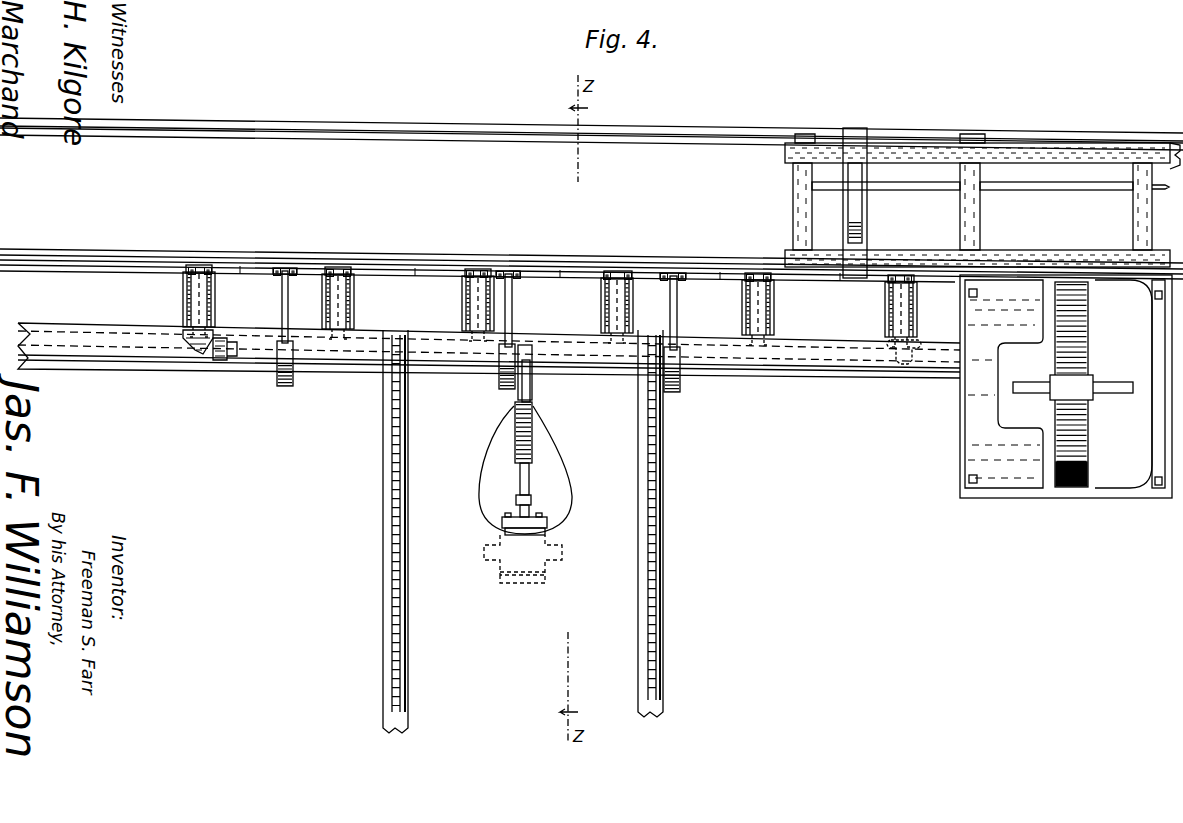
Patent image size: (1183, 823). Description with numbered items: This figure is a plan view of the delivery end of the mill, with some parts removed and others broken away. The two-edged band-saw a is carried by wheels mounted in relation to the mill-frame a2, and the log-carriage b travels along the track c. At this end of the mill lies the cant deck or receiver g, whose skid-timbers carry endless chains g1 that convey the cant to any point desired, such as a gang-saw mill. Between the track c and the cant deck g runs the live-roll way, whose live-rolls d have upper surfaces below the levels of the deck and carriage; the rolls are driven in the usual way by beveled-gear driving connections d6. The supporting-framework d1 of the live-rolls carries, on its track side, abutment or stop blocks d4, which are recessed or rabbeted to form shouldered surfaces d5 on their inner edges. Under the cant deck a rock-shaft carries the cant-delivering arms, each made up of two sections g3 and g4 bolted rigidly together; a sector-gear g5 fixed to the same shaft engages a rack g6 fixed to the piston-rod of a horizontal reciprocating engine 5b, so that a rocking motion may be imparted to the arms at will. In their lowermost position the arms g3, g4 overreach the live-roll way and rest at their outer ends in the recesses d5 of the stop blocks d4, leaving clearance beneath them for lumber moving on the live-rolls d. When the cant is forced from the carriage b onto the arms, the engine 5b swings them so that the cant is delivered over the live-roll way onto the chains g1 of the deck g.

The track c is at (518, 139).
The live-rolls d is at (211, 312).
The supporting-framework d1 is at (360, 273).
The abutment or stop block d4 is at (270, 276).
The shouldered surfaces (recesses) d5 is at (289, 269).
The beveled-gear driving connections d6 is at (200, 368).
The cant deck g is at (408, 551).
The endless chains g1 is at (401, 487).
The cant-delivering arm section g3 is at (294, 381).
The cant-delivering arm section g4 is at (288, 294).
The sector-gear g5 is at (534, 392).
The rack g6 is at (532, 458).
The horizontal reciprocating engine 5b is at (546, 528).
The log-carriage b is at (975, 219).
The two-edged band-saw a is at (1086, 352).
The mill-frame a2 is at (1156, 322).